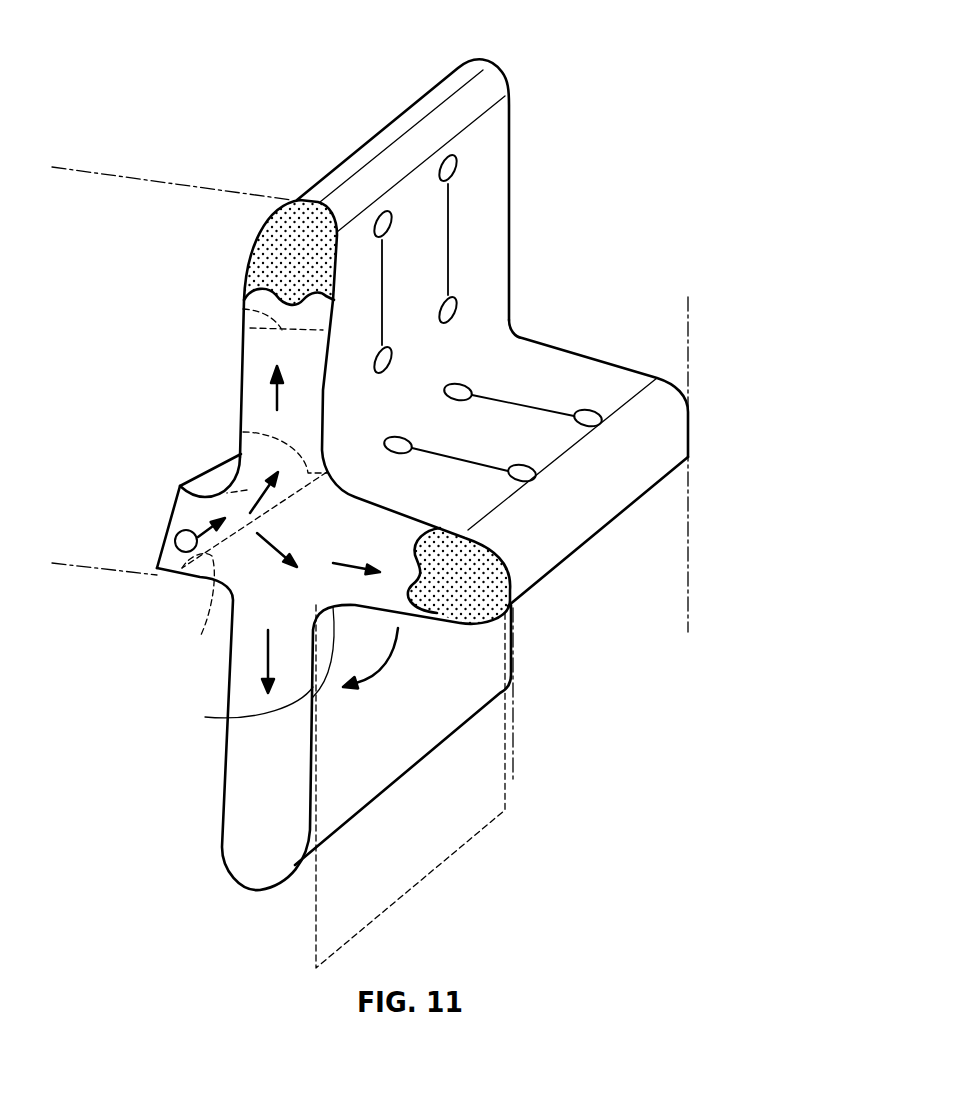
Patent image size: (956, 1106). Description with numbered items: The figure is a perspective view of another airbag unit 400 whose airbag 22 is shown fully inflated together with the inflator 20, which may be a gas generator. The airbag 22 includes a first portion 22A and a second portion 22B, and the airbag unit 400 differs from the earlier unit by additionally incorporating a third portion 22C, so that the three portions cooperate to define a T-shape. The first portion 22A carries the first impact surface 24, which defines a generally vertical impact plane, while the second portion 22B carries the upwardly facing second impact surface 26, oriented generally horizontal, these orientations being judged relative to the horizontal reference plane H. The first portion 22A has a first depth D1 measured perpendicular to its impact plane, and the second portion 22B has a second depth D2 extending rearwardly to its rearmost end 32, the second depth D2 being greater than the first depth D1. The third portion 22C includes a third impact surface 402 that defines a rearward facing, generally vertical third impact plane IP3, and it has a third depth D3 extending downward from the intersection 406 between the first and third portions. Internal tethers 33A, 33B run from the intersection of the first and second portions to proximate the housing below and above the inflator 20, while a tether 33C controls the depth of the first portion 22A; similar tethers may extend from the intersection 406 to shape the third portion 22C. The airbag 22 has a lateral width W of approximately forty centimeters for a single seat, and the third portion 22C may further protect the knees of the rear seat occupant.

The airbag unit 400 is at (558, 41).
The first impact surface 24 is at (420, 237).
The airbag 22 is at (491, 513).
The first portion 22A is at (449, 217).
The second portion 22B is at (535, 490).
The third portion 22C is at (378, 783).
The second impact surface 26 is at (530, 442).
The rearmost end 32 is at (543, 558).
The inflator 20 is at (178, 530).
The first tether 33A is at (201, 612).
The second tether 33B is at (243, 432).
The third tether 33C is at (243, 309).
The third impact surface 402 is at (438, 708).
The intersection 406 is at (236, 709).
The horizontal reference plane H is at (61, 180).
The width W is at (678, 631).
The first depth D1 is at (311, 347).
The second depth D2 is at (688, 305).
The third depth D3 is at (300, 735).
The third impact plane IP3 is at (313, 925).